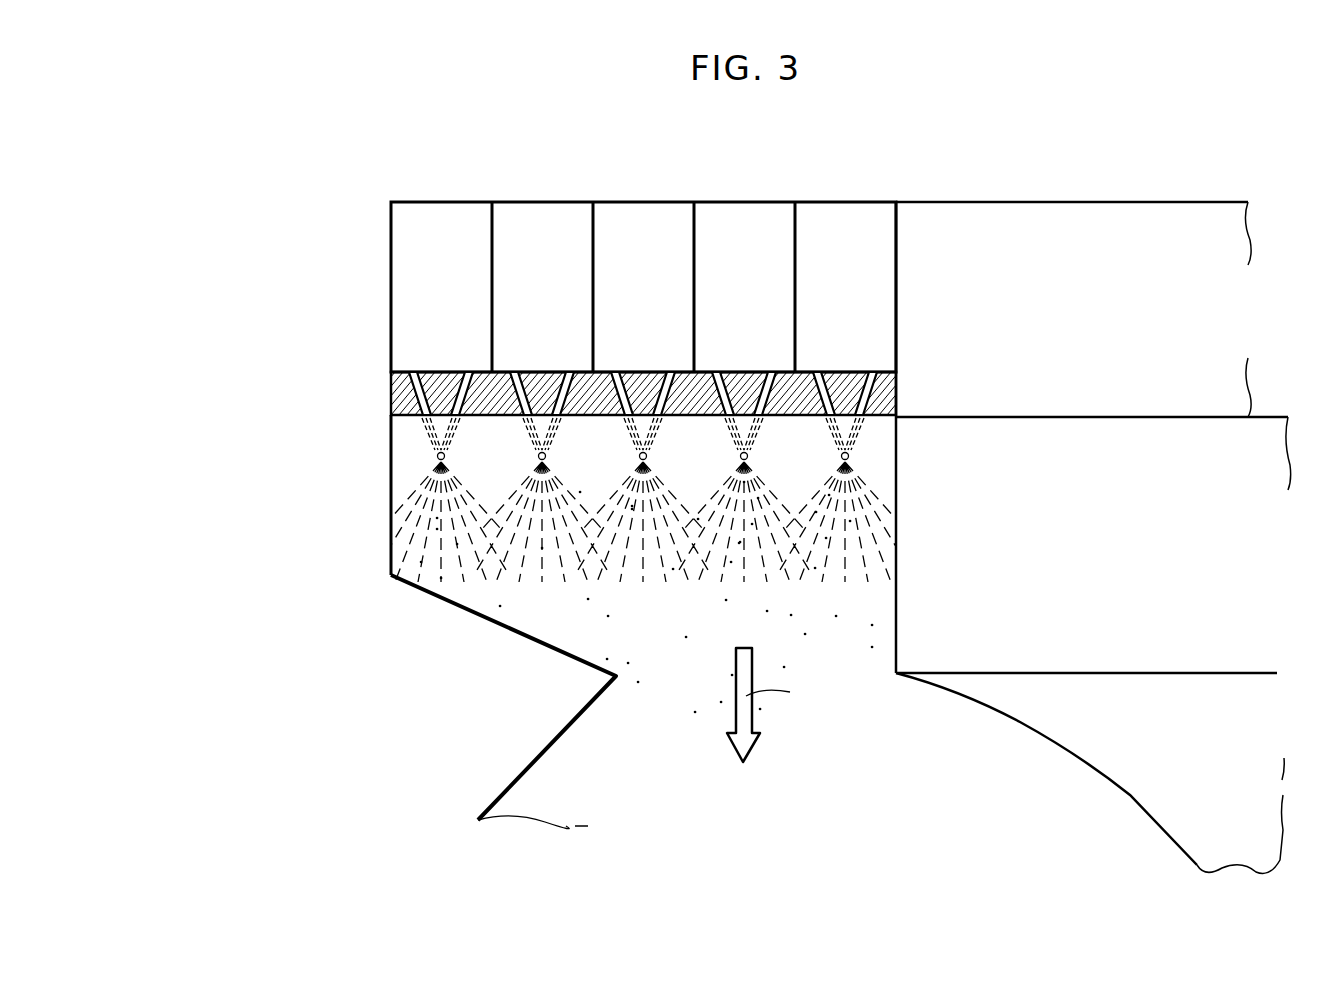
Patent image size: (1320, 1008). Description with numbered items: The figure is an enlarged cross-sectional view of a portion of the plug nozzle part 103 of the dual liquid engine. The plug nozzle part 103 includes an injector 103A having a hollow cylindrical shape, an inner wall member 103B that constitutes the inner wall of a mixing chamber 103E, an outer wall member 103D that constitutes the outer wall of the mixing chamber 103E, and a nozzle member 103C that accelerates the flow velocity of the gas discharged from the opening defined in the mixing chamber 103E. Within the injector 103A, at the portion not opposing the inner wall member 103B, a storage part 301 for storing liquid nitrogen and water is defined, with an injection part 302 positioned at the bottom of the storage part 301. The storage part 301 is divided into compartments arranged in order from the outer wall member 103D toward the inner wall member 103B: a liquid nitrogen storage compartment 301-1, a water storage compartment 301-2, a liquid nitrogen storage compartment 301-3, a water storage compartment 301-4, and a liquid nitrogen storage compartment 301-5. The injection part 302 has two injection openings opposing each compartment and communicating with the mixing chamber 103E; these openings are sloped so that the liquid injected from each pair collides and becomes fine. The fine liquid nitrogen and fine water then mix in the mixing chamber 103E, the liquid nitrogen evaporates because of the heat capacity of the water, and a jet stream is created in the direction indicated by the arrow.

The plug nozzle part 103 is at (255, 166).
The injector 103A is at (253, 228).
The storage part 301 is at (374, 269).
The LN2 storage compartment 301-1 is at (438, 226).
The H2O storage compartment 301-2 is at (539, 226).
The LN2 storage compartment 301-3 is at (641, 226).
The H2O storage compartment 301-4 is at (742, 226).
The LN2 storage compartment 301-5 is at (842, 226).
The injection part 302 is at (374, 397).
The inner wall member 103B is at (995, 578).
The nozzle member 103C is at (1113, 747).
The outer wall member 103D is at (518, 636).
The mixing chamber 103E is at (547, 600).